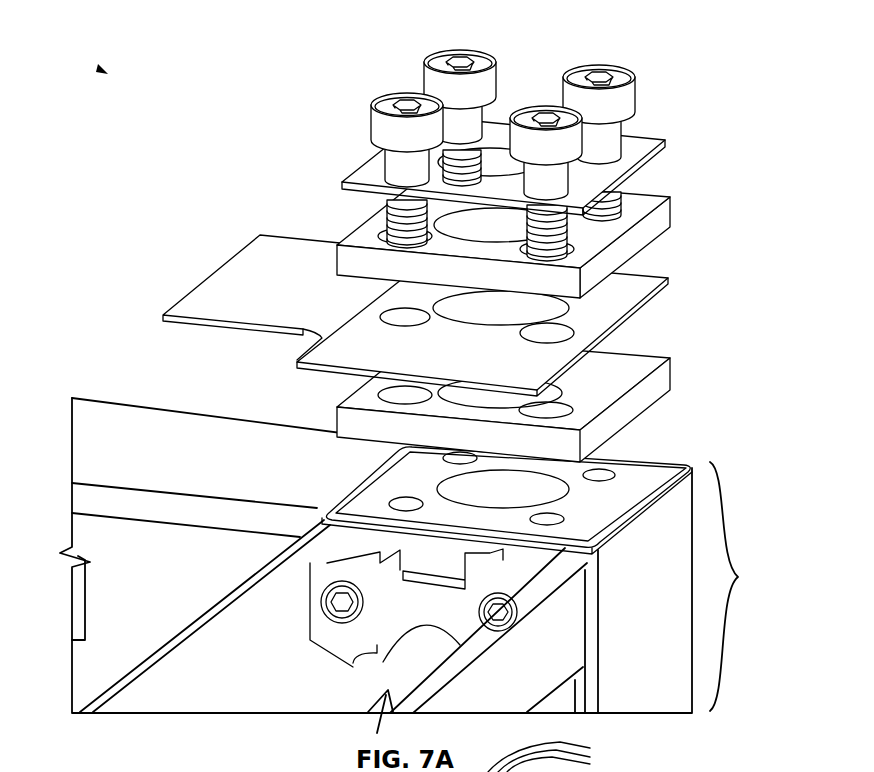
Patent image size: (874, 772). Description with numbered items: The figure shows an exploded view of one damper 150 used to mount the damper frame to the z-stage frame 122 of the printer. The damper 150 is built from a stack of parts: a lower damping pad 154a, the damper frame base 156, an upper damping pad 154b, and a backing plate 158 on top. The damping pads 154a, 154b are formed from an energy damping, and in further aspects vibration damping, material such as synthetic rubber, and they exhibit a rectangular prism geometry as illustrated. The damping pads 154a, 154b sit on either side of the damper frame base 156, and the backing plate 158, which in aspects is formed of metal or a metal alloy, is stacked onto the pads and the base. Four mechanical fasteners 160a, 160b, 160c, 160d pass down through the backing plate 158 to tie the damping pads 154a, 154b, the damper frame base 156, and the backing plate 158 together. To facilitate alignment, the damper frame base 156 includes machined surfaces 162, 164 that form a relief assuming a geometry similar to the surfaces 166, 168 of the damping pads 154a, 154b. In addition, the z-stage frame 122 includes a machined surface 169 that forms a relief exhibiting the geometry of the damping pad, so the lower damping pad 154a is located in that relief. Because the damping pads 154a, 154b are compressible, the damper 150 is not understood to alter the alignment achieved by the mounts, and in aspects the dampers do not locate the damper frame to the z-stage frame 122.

The damper 150 is at (102, 68).
The z-stage frame 122 is at (745, 578).
The damping pad 154a is at (545, 394).
The damping pad 154b is at (547, 237).
The damper frame base 156 is at (650, 280).
The backing plate 158 is at (645, 140).
The mechanical fastener 160a is at (610, 70).
The mechanical fastener 160b is at (546, 108).
The mechanical fastener 160c is at (461, 62).
The mechanical fastener 160d is at (384, 100).
The machined surface 162 is at (320, 375).
The machined surface 164 is at (251, 313).
The surface 166 is at (666, 232).
The surface 168 is at (640, 357).
The machined surface 169 is at (660, 470).